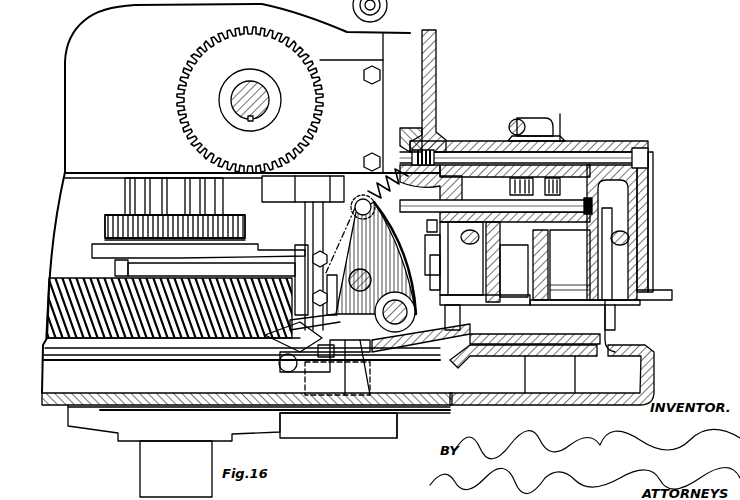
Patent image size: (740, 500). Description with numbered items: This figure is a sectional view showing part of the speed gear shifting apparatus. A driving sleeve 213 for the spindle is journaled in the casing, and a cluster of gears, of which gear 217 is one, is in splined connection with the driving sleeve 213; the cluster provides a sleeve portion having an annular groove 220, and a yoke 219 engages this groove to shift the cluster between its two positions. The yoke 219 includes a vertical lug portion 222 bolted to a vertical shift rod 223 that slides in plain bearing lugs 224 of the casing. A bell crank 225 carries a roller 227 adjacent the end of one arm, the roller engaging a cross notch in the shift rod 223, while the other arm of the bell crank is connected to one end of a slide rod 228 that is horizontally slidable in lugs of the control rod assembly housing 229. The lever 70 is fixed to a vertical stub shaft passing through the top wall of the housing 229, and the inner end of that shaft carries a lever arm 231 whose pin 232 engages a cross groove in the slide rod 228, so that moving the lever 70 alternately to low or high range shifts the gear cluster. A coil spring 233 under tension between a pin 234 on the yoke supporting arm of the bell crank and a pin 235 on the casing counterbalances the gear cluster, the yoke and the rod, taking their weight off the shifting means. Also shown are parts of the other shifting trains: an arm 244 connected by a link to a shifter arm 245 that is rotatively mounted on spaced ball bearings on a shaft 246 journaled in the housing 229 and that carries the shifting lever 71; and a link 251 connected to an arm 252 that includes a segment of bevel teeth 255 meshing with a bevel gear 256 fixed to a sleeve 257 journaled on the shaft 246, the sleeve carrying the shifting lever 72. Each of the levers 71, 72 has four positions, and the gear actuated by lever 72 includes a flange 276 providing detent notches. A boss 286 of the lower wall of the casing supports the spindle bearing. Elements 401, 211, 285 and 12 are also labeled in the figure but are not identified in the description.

The gear 401 is at (305, 107).
The base frame 211 is at (137, 313).
The driving sleeve 213 is at (155, 195).
The gear 217 is at (105, 226).
The yoke 219 is at (227, 288).
The annular groove 220 is at (128, 268).
The vertical lug portion 222 is at (298, 270).
The vertical shift rod 223 is at (315, 176).
The plain bearing lugs 224 is at (285, 375).
The bell crank 225 is at (400, 200).
The roller 227 is at (354, 263).
The slide rod 228 is at (605, 205).
The control rod assembly housing 229 is at (648, 245).
The lever arm 231 is at (570, 165).
The pin 232 is at (540, 222).
The coil spring 233 is at (404, 150).
The pin 234 is at (270, 330).
The pin 235 is at (432, 150).
The arm 244 is at (478, 140).
The shifter arm 245 is at (458, 312).
The shaft 246 is at (425, 265).
The link 251 is at (352, 370).
The arm 252 is at (454, 372).
The segment of bevel teeth 255 is at (541, 363).
The bevel gear 256 is at (545, 272).
The sleeve 257 is at (565, 350).
The flange 276 is at (612, 318).
The lever 285 is at (530, 322).
The boss 286 is at (462, 362).
The lever 70 is at (528, 122).
The shifting lever 71 is at (465, 245).
The shifting lever 72 is at (612, 243).
The frame 12 is at (574, 4).